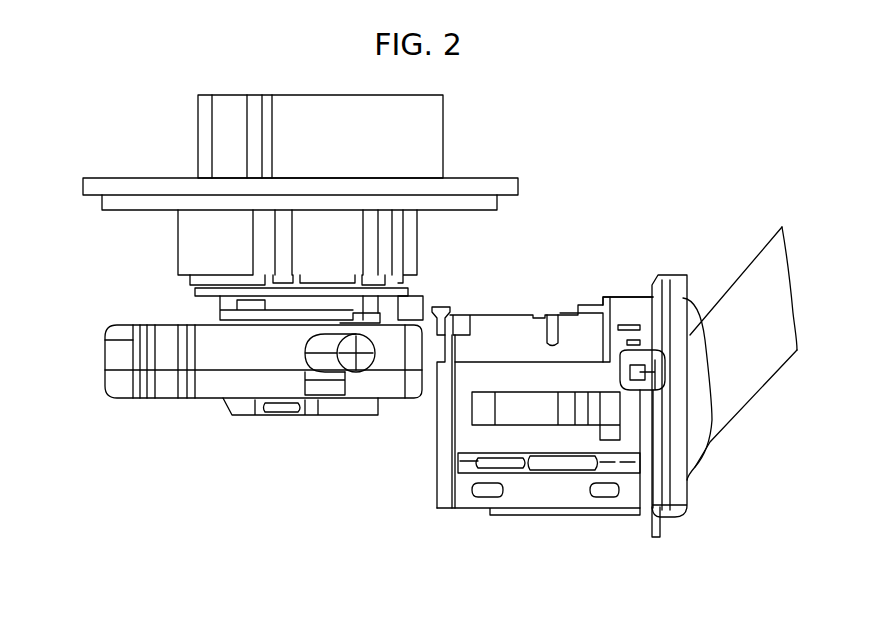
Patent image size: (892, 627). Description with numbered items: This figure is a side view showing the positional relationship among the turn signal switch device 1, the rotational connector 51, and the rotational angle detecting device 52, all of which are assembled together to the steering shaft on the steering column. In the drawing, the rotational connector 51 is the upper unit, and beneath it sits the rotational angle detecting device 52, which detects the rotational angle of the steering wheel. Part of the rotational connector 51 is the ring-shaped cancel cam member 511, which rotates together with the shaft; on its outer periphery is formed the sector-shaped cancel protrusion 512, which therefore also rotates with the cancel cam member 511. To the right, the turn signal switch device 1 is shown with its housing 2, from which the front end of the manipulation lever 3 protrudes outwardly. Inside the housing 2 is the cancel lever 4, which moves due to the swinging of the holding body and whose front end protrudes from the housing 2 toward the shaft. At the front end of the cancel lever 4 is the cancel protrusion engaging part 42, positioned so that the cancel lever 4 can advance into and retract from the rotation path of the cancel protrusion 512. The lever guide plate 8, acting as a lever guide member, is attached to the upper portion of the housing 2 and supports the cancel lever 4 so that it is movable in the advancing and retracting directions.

The turn signal switch device 1 is at (620, 275).
The housing 2 is at (542, 498).
The manipulation lever 3 is at (740, 290).
The cancel lever 4 is at (485, 348).
The lever guide plate 8 is at (437, 420).
The cancel protrusion engaging part 42 is at (437, 303).
The rotational connector 51 is at (187, 235).
The cancel cam member 511 is at (372, 272).
The cancel protrusion 512 is at (413, 307).
The rotational angle detecting device 52 is at (113, 355).